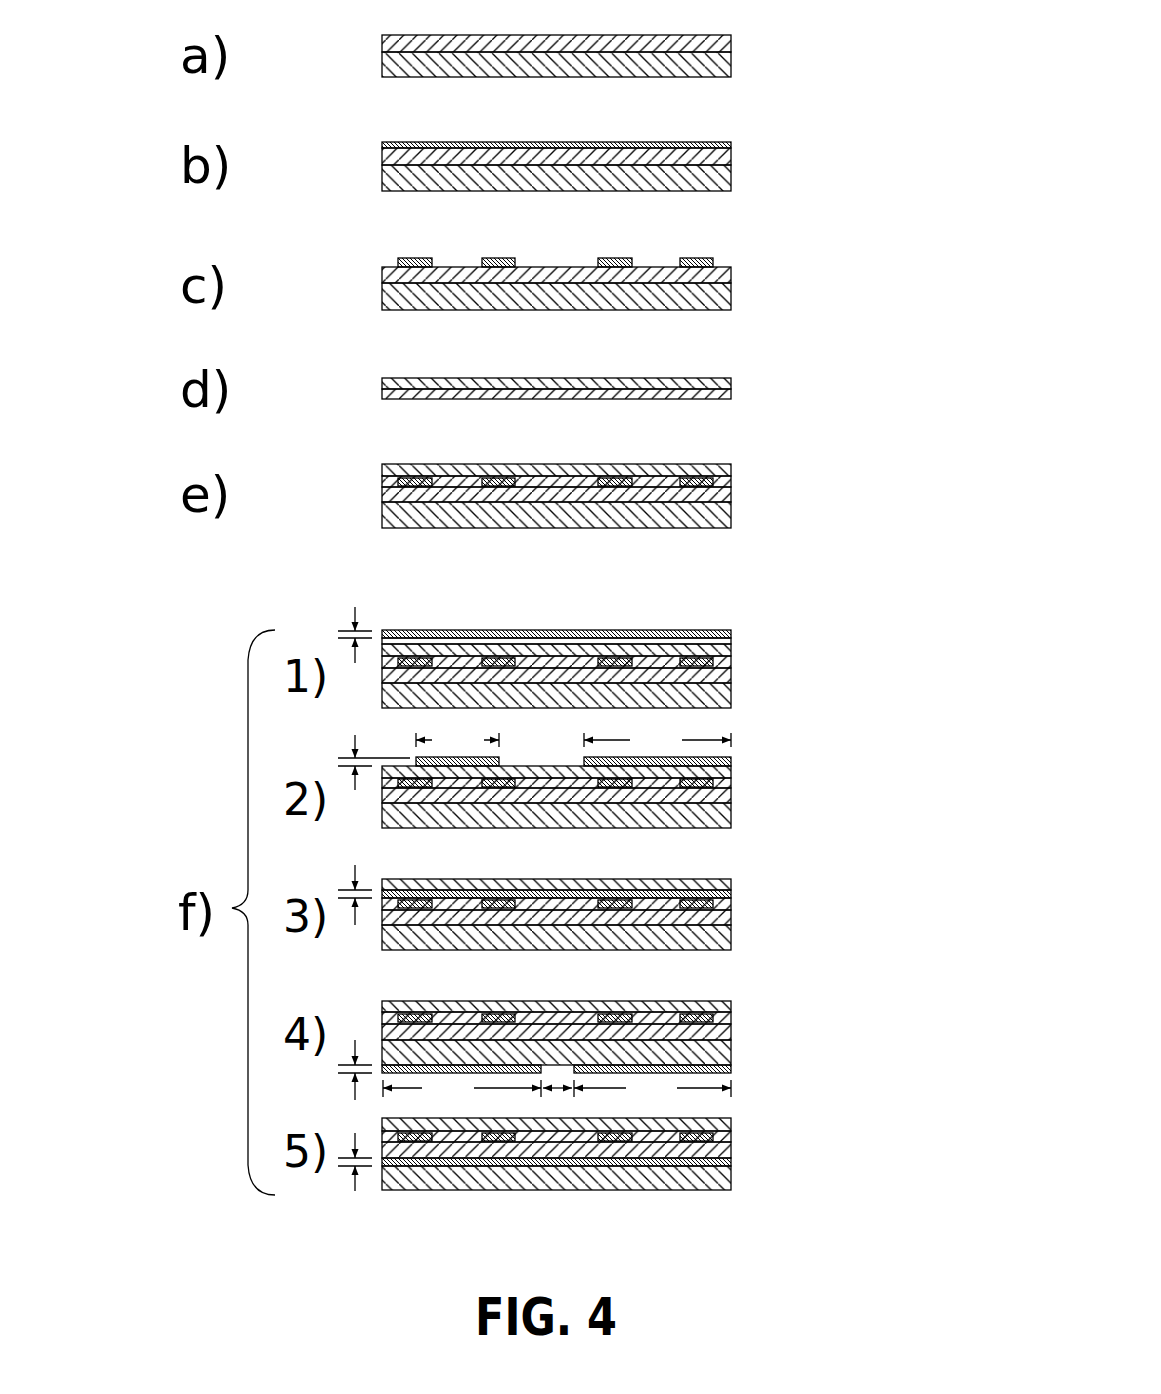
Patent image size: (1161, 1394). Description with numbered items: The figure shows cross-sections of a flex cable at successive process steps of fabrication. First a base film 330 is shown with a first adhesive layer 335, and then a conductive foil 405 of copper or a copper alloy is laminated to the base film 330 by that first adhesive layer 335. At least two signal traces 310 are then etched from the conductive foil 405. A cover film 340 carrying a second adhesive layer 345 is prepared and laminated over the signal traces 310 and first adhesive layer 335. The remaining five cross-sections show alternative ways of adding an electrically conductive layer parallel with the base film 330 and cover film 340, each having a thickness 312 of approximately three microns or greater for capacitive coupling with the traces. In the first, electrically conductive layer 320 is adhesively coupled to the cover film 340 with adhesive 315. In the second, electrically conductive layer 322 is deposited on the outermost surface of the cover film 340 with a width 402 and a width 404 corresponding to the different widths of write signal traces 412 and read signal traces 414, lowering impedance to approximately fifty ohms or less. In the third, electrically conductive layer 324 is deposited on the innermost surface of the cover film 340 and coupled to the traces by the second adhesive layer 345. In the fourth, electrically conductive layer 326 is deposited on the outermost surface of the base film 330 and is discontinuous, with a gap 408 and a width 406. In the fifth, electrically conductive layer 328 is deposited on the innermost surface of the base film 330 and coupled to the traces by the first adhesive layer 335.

The base film 330 is at (722, 68).
The first adhesive layer 335 is at (723, 45).
The conductive foil 405 is at (631, 142).
The signal traces 310 is at (698, 258).
The cover film 340 is at (389, 380).
The second adhesive layer 345 is at (389, 392).
The electrically conductive layer 320 is at (630, 630).
The adhesive 315 is at (732, 640).
The thickness 312 is at (371, 900).
The electrically conductive layer 322 is at (498, 757).
The width 402 is at (457, 740).
The width 404 is at (657, 740).
The signal traces 412 is at (414, 787).
The signal traces 414 is at (622, 787).
The electrically conductive layer 324 is at (731, 896).
The width 406 is at (557, 1088).
The gap 408 is at (557, 1087).
The electrically conductive layer 326 is at (731, 1069).
The electrically conductive layer 328 is at (731, 1162).